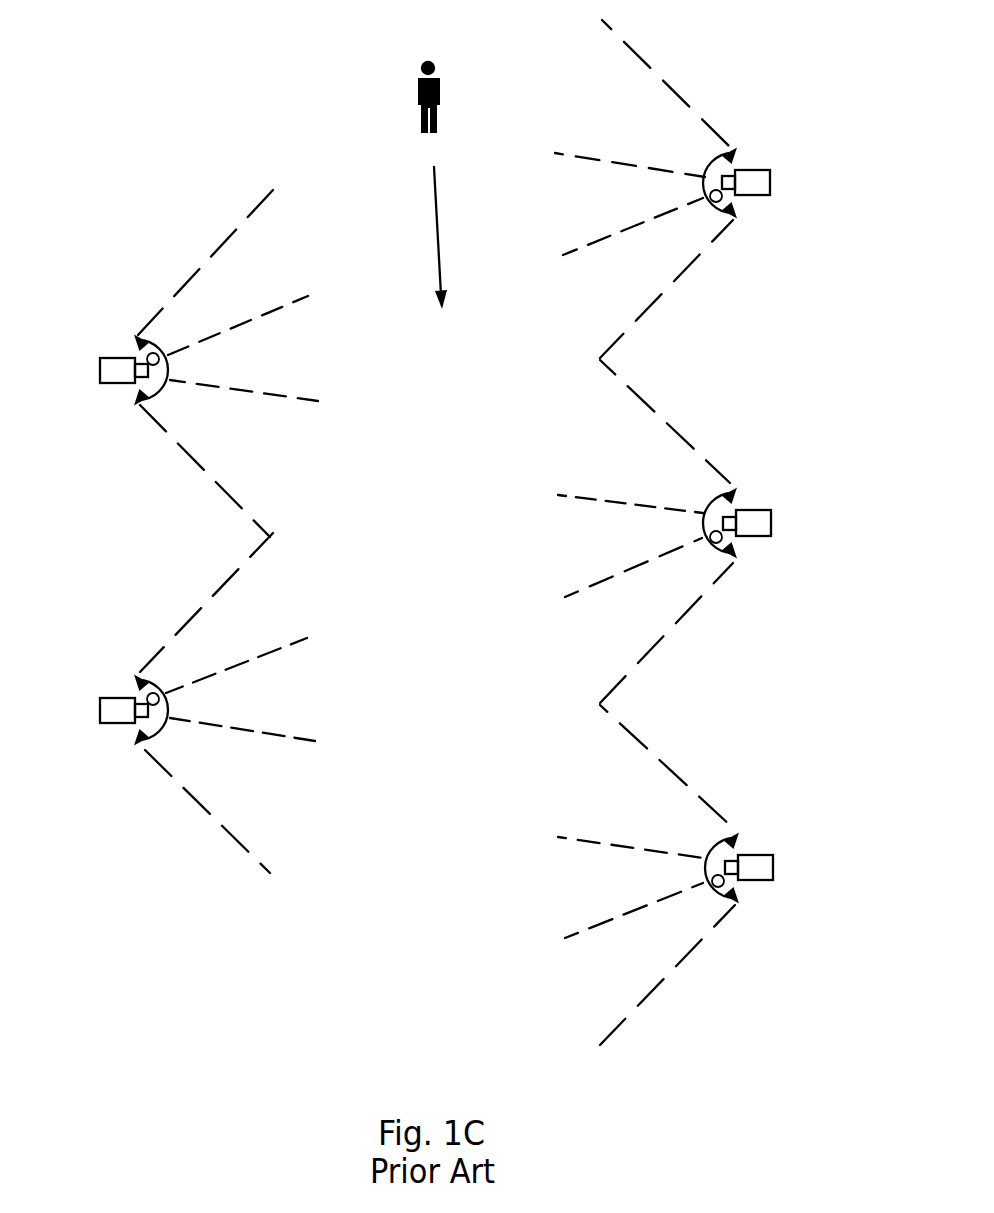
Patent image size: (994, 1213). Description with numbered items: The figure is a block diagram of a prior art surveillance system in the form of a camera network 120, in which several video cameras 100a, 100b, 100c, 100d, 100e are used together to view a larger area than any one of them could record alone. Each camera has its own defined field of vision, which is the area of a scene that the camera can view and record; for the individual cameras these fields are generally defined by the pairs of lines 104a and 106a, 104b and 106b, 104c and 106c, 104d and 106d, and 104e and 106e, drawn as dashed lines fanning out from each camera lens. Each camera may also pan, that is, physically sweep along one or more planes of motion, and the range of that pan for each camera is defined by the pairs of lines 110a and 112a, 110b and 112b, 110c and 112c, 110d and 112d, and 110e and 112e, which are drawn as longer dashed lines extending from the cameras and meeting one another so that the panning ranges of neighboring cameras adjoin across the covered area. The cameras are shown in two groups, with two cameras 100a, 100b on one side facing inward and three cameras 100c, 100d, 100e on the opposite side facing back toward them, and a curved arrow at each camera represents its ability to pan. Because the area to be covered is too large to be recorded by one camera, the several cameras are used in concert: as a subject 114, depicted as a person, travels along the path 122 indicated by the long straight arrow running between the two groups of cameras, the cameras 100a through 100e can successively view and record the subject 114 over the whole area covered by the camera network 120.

The camera 100a is at (104, 356).
The camera 100b is at (104, 696).
The camera 100c is at (770, 170).
The camera 100d is at (770, 510).
The camera 100e is at (771, 855).
The field of vision line 104a is at (276, 314).
The field of vision line 104b is at (282, 650).
The field of vision line 104c is at (608, 160).
The field of vision line 104d is at (593, 497).
The field of vision line 104e is at (620, 845).
The field of vision line 106a is at (262, 393).
The field of vision line 106b is at (275, 734).
The field of vision line 106c is at (620, 232).
The field of vision line 106d is at (625, 570).
The field of vision line 106e is at (620, 917).
The panning range line 110a is at (243, 224).
The panning range line 110b is at (215, 596).
The panning range line 110c is at (639, 57).
The panning range line 110d is at (663, 418).
The panning range line 110e is at (648, 743).
The panning range line 112a is at (188, 451).
The panning range line 112b is at (219, 824).
The panning range line 112c is at (696, 258).
The panning range line 112d is at (688, 605).
The panning range line 112e is at (662, 983).
The subject 114 is at (413, 100).
The camera network 120 is at (132, 93).
The path 122 is at (437, 221).